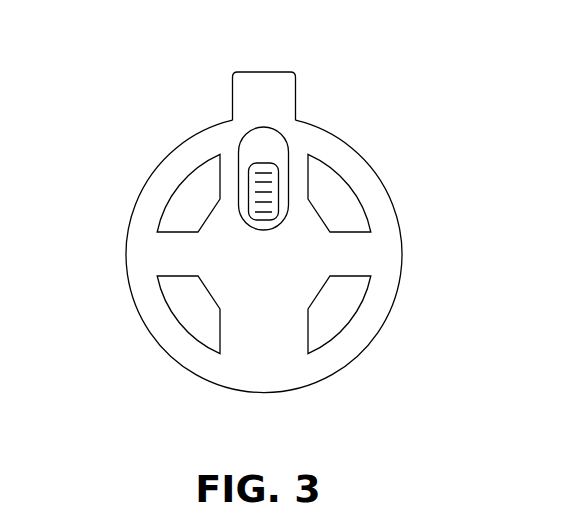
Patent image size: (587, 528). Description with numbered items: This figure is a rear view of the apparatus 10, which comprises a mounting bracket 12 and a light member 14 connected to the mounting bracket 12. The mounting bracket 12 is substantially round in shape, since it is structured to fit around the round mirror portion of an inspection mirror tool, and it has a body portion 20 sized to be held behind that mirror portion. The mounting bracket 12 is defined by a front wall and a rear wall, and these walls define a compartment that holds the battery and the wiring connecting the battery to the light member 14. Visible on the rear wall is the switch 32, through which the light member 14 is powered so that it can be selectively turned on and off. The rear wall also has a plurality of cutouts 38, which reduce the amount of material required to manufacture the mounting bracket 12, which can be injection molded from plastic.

The apparatus 10 is at (158, 133).
The mounting bracket 12 is at (402, 267).
The light member 14 is at (265, 72).
The body portion 20 is at (260, 332).
The switch 32 is at (268, 180).
The cutouts 38 is at (337, 292).